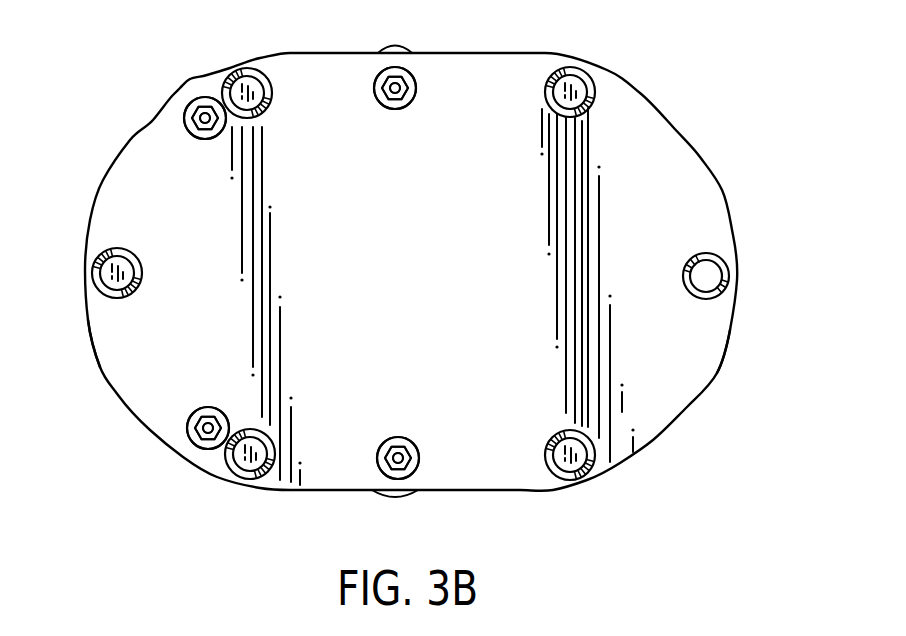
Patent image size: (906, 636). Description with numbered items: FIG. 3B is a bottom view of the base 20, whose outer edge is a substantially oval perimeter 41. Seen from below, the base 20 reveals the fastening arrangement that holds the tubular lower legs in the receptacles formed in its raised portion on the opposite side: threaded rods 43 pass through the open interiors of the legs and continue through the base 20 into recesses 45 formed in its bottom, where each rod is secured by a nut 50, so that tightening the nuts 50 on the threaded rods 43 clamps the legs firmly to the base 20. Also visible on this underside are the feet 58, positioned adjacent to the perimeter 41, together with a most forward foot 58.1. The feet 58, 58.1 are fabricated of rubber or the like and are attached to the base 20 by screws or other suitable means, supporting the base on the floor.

The base 20 is at (540, 492).
The perimeter 41 is at (717, 373).
The threaded rods 43 is at (385, 465).
The recesses 45 is at (415, 455).
The nuts 50 is at (398, 462).
The feet 58 is at (627, 498).
The most forward foot 58.1 is at (712, 278).